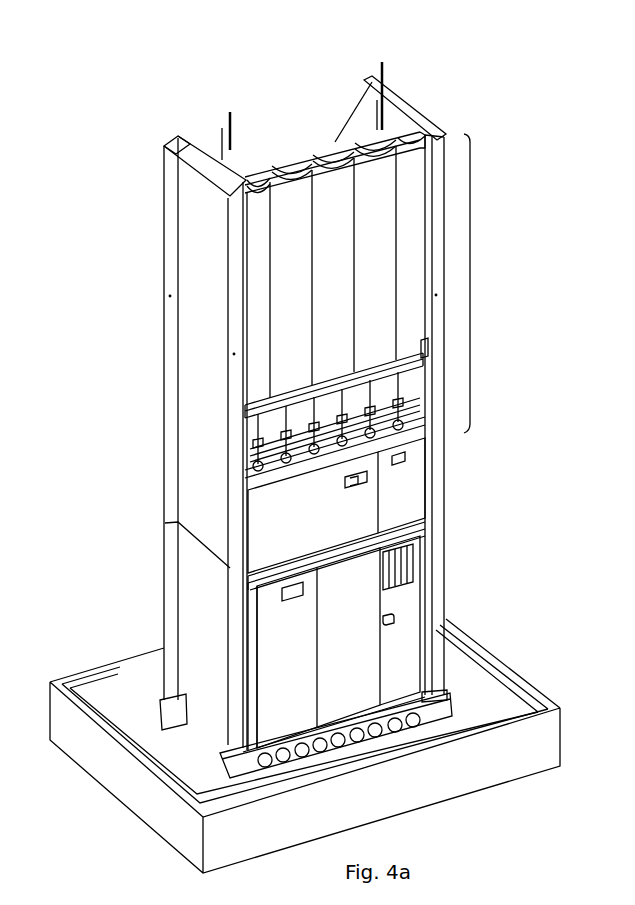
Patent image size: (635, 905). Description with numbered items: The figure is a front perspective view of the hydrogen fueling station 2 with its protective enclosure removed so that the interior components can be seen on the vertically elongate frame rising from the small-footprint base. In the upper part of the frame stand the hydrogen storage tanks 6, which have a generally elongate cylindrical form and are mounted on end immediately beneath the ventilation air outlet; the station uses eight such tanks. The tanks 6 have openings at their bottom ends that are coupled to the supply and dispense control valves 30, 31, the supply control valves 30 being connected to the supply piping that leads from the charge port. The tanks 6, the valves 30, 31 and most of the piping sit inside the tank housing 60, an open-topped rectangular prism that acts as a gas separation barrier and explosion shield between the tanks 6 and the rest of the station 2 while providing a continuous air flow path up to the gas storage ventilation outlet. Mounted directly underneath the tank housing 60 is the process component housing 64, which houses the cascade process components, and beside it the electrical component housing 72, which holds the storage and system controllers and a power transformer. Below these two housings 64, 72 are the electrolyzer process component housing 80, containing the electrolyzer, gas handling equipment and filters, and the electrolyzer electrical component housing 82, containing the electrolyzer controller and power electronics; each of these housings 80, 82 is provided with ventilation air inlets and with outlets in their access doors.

The station 2 is at (530, 125).
The hydrogen storage tanks 6 is at (283, 307).
The supply control valves 30 is at (252, 448).
The dispense control valves 31 is at (240, 462).
The tank housing 60 is at (485, 283).
The process component housing 64 is at (277, 543).
The electrical component housing 72 is at (400, 483).
The electrolyzer process component housing 80 is at (273, 652).
The electrolyzer electrical component housing 82 is at (403, 615).